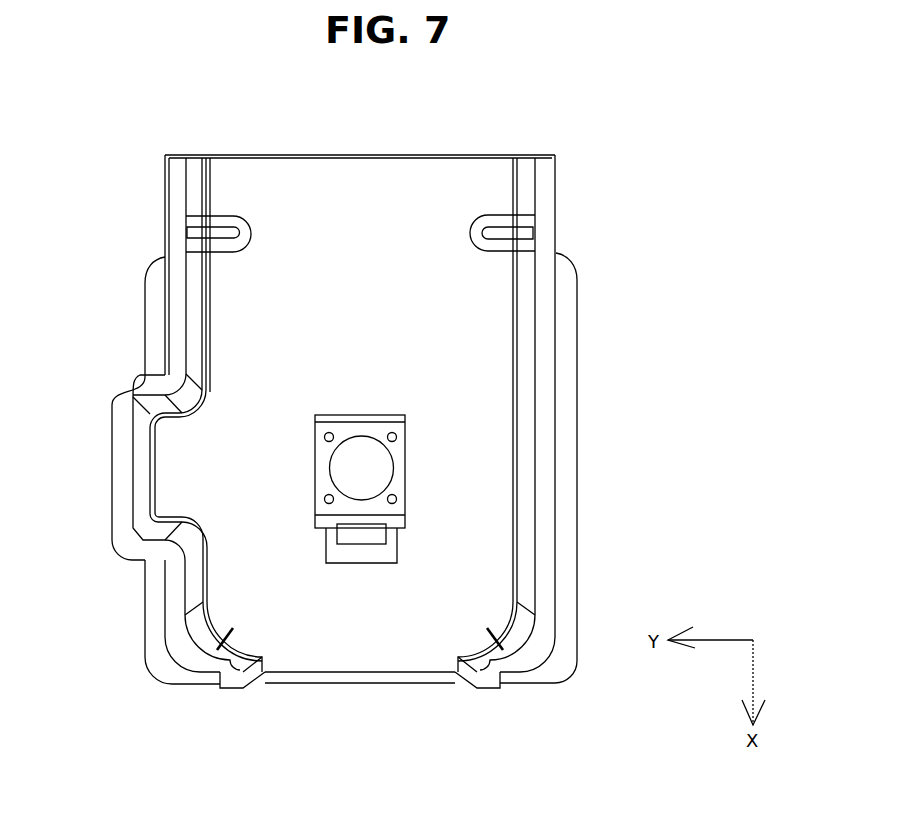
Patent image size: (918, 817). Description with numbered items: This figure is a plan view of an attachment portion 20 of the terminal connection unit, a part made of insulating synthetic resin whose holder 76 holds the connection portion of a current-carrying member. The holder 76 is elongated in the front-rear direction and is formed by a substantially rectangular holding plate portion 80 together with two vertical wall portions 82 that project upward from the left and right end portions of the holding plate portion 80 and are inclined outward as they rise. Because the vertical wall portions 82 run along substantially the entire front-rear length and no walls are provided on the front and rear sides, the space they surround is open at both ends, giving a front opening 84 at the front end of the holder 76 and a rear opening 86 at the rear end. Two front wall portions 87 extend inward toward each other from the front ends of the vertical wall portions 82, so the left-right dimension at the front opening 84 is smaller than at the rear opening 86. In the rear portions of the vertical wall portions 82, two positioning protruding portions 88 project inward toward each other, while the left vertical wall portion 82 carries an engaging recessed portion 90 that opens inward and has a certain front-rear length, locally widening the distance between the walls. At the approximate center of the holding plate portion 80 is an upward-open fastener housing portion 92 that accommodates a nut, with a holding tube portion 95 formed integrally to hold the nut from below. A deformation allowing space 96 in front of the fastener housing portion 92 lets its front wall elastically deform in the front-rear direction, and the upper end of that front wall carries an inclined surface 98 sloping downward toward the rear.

The attachment portion 20 is at (611, 122).
The holder 76 is at (556, 363).
The holding plate portion 80 is at (345, 182).
The vertical wall portion 82 is at (175, 301).
The front opening 84 is at (263, 684).
The rear opening 86 is at (197, 177).
The front wall portion 87 is at (508, 668).
The positioning protruding portion 88 is at (218, 222).
The engaging recessed portion 90 is at (142, 455).
The fastener housing portion 92 is at (398, 474).
The holding tube portion 95 is at (347, 468).
The deformation allowing space 96 is at (360, 553).
The inclined surface 98 is at (372, 527).